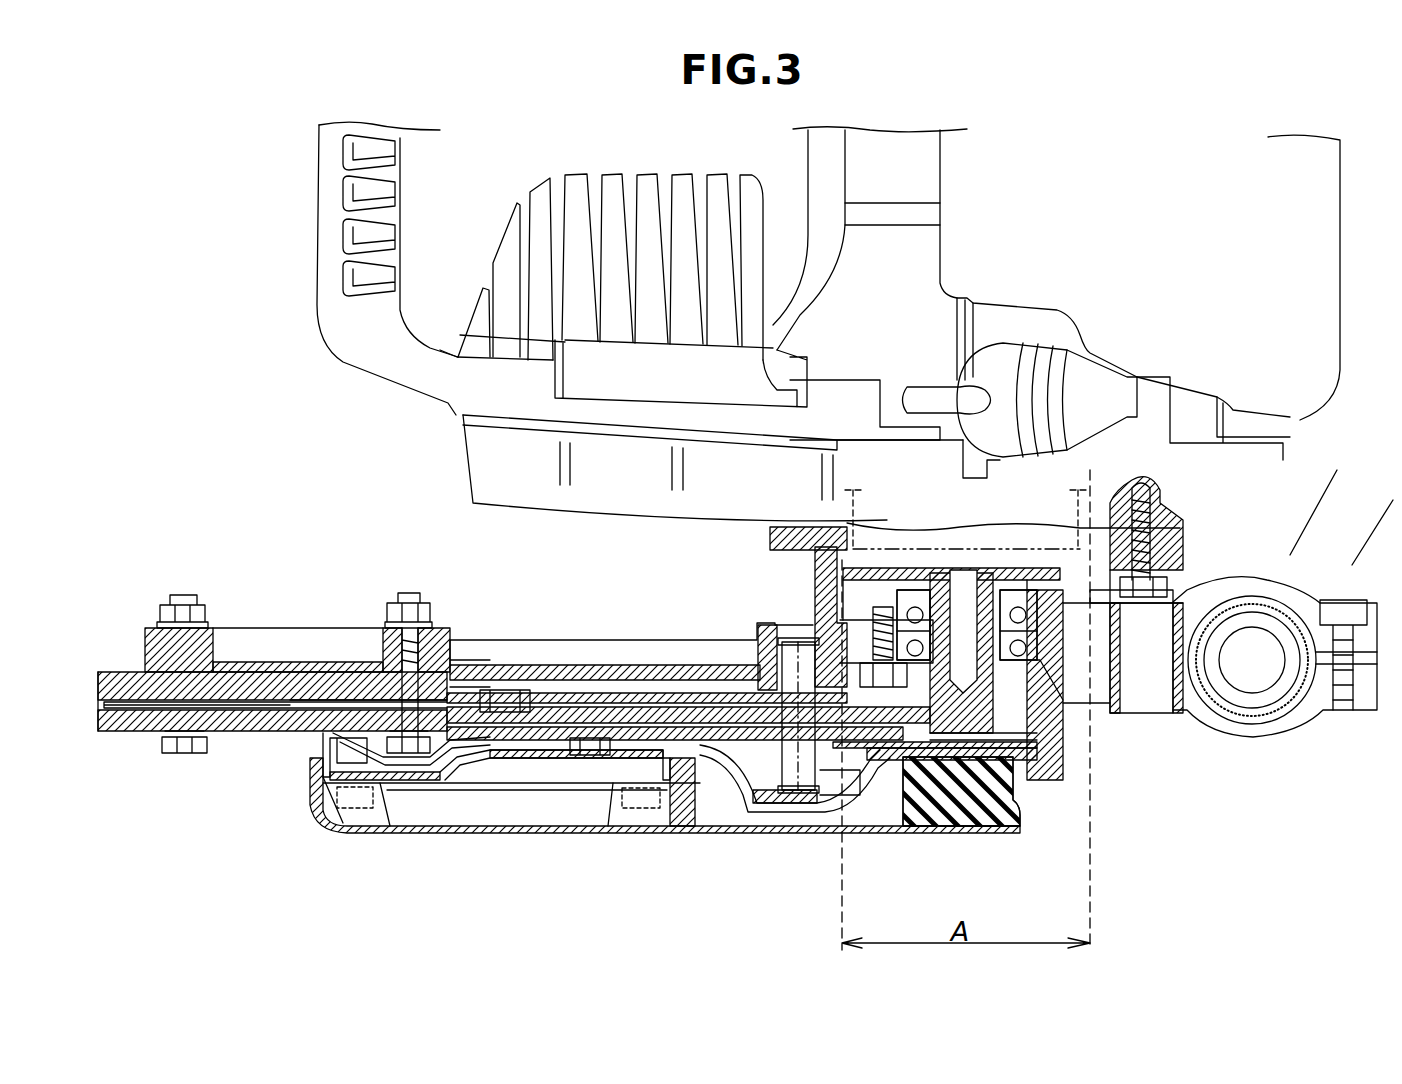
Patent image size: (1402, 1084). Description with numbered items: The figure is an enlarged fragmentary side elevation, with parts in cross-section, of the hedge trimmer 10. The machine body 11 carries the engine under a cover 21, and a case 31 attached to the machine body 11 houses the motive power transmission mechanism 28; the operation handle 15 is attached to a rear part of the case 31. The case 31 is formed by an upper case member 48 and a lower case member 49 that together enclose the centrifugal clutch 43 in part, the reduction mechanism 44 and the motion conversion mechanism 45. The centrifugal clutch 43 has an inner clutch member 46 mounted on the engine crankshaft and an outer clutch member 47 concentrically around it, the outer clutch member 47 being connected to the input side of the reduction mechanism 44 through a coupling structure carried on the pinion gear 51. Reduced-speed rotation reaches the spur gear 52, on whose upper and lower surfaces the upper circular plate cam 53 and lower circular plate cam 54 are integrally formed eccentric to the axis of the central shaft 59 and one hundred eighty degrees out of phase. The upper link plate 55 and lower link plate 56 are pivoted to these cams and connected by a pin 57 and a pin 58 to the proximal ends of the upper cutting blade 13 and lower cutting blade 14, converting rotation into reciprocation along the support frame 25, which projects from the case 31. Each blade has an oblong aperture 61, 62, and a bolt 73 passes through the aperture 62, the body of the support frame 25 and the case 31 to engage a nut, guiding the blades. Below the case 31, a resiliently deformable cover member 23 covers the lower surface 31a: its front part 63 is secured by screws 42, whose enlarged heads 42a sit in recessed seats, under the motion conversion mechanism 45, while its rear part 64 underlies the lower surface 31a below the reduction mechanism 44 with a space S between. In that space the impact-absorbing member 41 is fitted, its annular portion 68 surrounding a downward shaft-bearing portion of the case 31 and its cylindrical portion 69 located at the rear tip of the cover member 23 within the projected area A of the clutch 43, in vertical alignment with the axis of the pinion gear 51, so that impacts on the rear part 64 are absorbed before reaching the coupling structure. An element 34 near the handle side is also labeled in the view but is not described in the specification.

The hedge trimmer 10 is at (262, 105).
The machine body 11 is at (455, 462).
The upper cutting blade 13 is at (130, 672).
The lower cutting blade 14 is at (130, 730).
The operation handle 15 is at (1333, 478).
The cover 21 is at (315, 250).
The cover member 23 is at (312, 817).
The support frame 25 is at (280, 678).
The motive power transmission mechanism 28 is at (605, 660).
The case 31 is at (1223, 848).
The lower surface of the case 31a is at (1065, 810).
The clamp bolt 34 is at (1318, 548).
The impact-absorbing member 41 is at (895, 815).
The screw 42 is at (358, 810).
The enlarged head of the screw 42a is at (330, 810).
The centrifugal clutch 43 is at (1267, 323).
The reduction mechanism 44 is at (975, 890).
The motion conversion mechanism 45 is at (626, 657).
The inner clutch member 46 is at (1110, 482).
The outer clutch member 47 is at (1162, 576).
The upper case member 48 is at (1150, 665).
The lower case member 49 is at (1100, 712).
The pinion gear 51 is at (1035, 800).
The spur gear 52 is at (985, 805).
The upper circular plate cam 53 is at (733, 677).
The lower circular plate cam 54 is at (822, 820).
The upper link plate 55 is at (660, 677).
The lower link plate 56 is at (735, 790).
The pin 57 is at (522, 690).
The pin 58 is at (585, 756).
The central shaft 59 is at (792, 795).
The oblong aperture 61 is at (353, 712).
The oblong aperture 62 is at (496, 790).
The front part of the cover member 63 is at (432, 835).
The rear part of the cover member 64 is at (746, 835).
The annular portion 68 is at (680, 828).
The cylindrical portion 69 is at (947, 823).
The bolt 73 is at (190, 597).